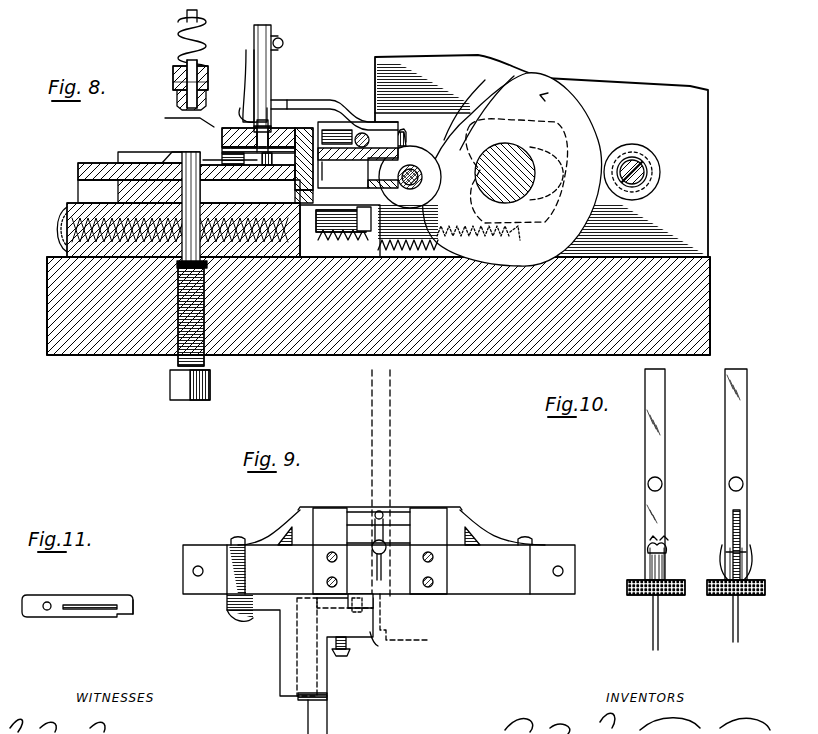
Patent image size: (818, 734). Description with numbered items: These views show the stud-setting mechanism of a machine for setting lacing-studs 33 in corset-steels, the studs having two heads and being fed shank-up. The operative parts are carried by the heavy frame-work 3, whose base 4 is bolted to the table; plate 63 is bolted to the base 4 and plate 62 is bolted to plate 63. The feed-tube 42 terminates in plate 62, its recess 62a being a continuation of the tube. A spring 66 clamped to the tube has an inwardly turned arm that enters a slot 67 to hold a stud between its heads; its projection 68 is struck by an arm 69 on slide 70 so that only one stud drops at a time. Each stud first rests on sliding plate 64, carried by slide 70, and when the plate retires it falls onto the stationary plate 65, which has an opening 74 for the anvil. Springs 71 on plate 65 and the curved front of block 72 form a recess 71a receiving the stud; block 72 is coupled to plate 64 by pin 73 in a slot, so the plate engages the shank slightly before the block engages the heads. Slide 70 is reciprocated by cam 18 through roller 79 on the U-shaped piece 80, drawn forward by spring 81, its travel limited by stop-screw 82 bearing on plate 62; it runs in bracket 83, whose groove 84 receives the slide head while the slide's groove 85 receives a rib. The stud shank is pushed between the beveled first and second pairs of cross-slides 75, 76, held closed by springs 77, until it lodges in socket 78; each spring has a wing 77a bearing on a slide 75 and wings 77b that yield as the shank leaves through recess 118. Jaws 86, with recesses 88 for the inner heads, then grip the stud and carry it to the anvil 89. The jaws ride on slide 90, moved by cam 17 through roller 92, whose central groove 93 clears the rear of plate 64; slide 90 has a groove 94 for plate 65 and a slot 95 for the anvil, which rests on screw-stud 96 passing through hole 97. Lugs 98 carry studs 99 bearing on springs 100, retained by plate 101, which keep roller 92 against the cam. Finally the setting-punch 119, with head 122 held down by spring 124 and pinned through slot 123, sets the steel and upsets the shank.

In FIG. 8, the frame-work 3 is at (541, 156).
In FIG. 8, the base 4 is at (432, 368).
In FIG. 8, the cam 17 is at (512, 169).
In FIG. 8, the cam 18 is at (492, 96).
In FIG. 8, the studs 33 is at (270, 122).
In FIG. 8, the feed-tube 42 is at (272, 32).
In FIG. 8, the plate 62 is at (222, 131).
In FIG. 9, the plate 62 is at (379, 569).
In FIG. 8, the recess 62a is at (274, 110).
In FIG. 9, the recess 62a is at (373, 551).
In FIG. 8, the plate 63 is at (78, 211).
In FIG. 8, the sliding plate 64 is at (358, 155).
In FIG. 10, the sliding plate 64 is at (740, 570).
In FIG. 8, the stationary plate 65 is at (93, 158).
In FIG. 9, the stationary plate 65 is at (384, 424).
In FIG. 10, the stationary plate 65 is at (726, 420).
In FIG. 8, the spring 66 is at (245, 110).
In FIG. 8, the slot 67 is at (290, 100).
In FIG. 8, the projection 68 is at (240, 114).
In FIG. 8, the arm 69 is at (330, 104).
In FIG. 9, the arm 69 is at (366, 598).
In FIG. 8, the slide 70 is at (417, 134).
In FIG. 9, the slide 70 is at (372, 640).
In FIG. 8, the springs 71 is at (267, 166).
In FIG. 10, the springs 71 is at (648, 551).
In FIG. 10, the recess 71a is at (650, 541).
In FIG. 8, the block 72 is at (304, 128).
In FIG. 10, the block 72 is at (652, 570).
In FIG. 8, the pin 73 is at (514, 173).
In FIG. 8, the opening 74 is at (167, 163).
In FIG. 10, the opening 74 is at (729, 484).
In FIG. 8, the first pair of cross-slides 75 is at (240, 168).
In FIG. 9, the first pair of cross-slides 75 is at (379, 536).
In FIG. 8, the second pair of cross-slides 76 is at (222, 149).
In FIG. 9, the second pair of cross-slides 76 is at (354, 518).
In FIG. 11, the springs 77 is at (48, 595).
In FIG. 9, the wing 77a is at (262, 544).
In FIG. 11, the wing 77a is at (96, 610).
In FIG. 9, the wings 77b is at (302, 510).
In FIG. 11, the wings 77b is at (132, 598).
In FIG. 8, the socket 78 is at (250, 119).
In FIG. 9, the socket 78 is at (386, 512).
In FIG. 8, the roller 79 is at (656, 172).
In FIG. 8, the U-shaped piece 80 is at (606, 150).
In FIG. 8, the spring 81 is at (430, 238).
In FIG. 8, the stop-screw 82 is at (405, 147).
In FIG. 9, the stop-screw 82 is at (344, 656).
In FIG. 8, the bracket 83 is at (335, 128).
In FIG. 9, the bracket 83 is at (290, 652).
In FIG. 8, the groove 84 is at (331, 175).
In FIG. 9, the groove 84 is at (298, 692).
In FIG. 9, the groove 85 is at (328, 696).
In FIG. 8, the jaws 86 is at (196, 160).
In FIG. 8, the recesses 88 is at (209, 184).
In FIG. 8, the anvil 89 is at (140, 163).
In FIG. 8, the slide 90 is at (118, 192).
In FIG. 8, the roller 92 is at (410, 184).
In FIG. 8, the central groove 93 is at (436, 180).
In FIG. 8, the groove 94 is at (375, 181).
In FIG. 8, the slot 95 is at (296, 191).
In FIG. 8, the screw-stud 96 is at (206, 370).
In FIG. 8, the hole 97 is at (177, 263).
In FIG. 8, the lugs 98 is at (366, 217).
In FIG. 8, the studs 99 is at (334, 228).
In FIG. 8, the springs 100 is at (74, 232).
In FIG. 8, the plate 101 is at (60, 247).
In FIG. 8, the recess 118 is at (179, 116).
In FIG. 9, the recess 118 is at (376, 508).
In FIG. 8, the setting-punch 119 is at (174, 78).
In FIG. 8, the head 122 is at (176, 97).
In FIG. 8, the slot 123 is at (206, 80).
In FIG. 8, the spring 124 is at (180, 32).